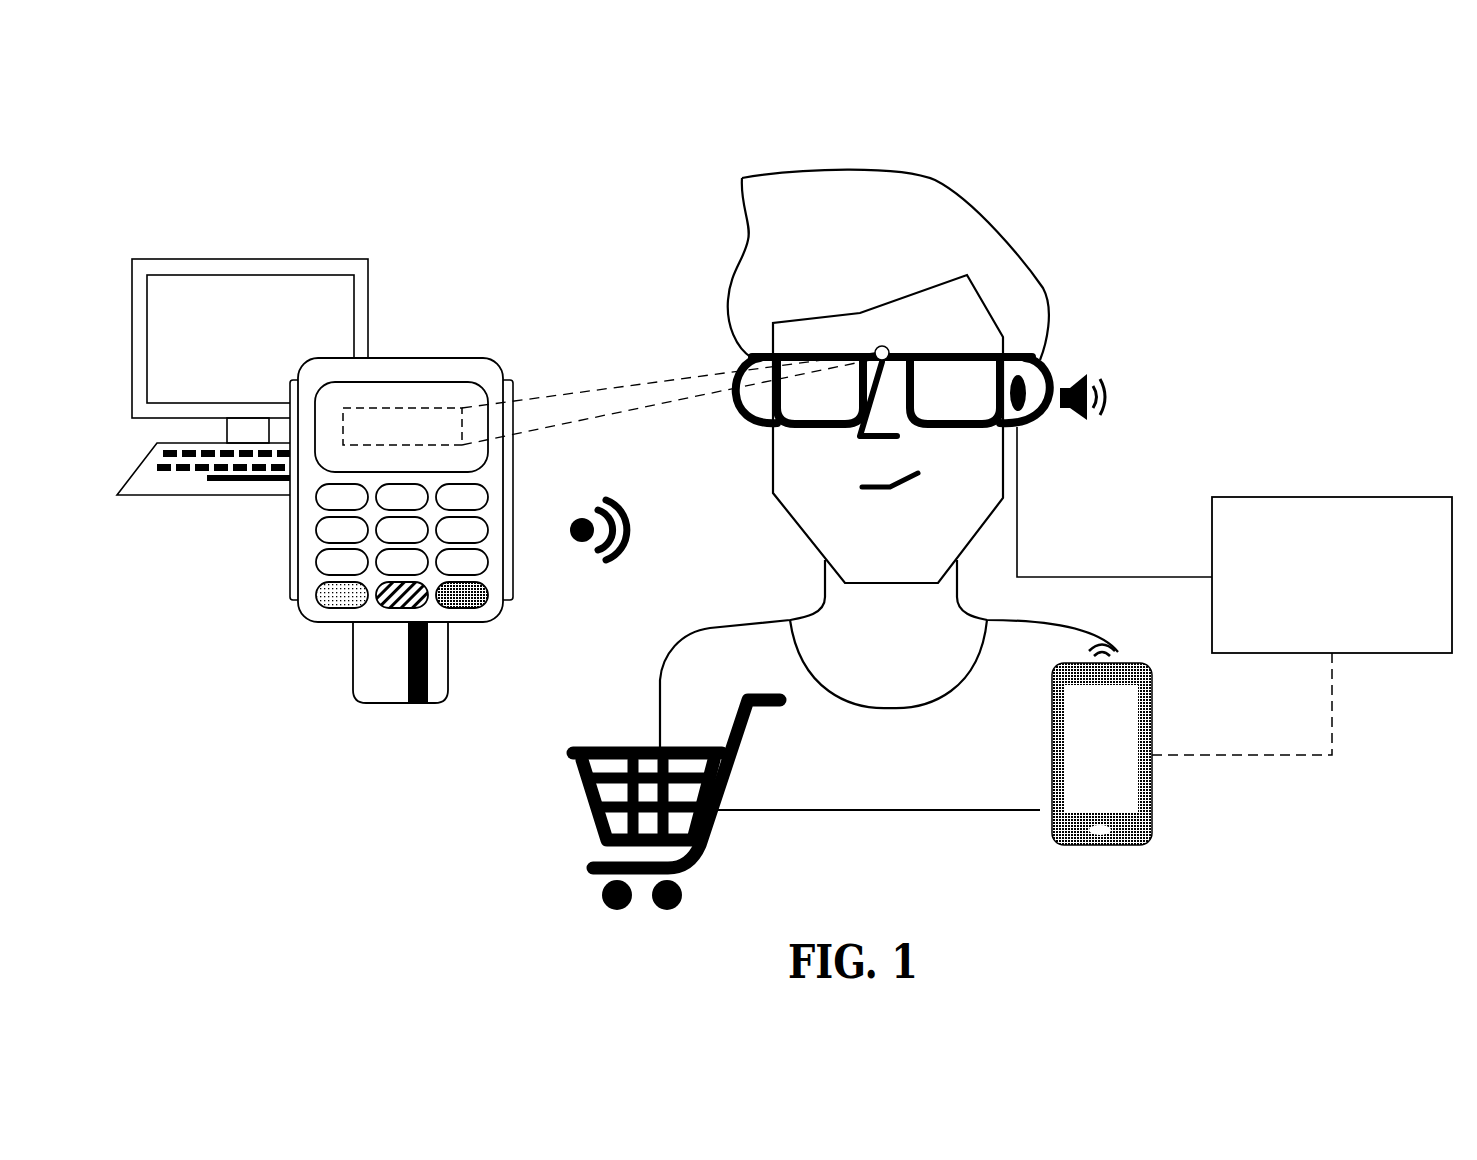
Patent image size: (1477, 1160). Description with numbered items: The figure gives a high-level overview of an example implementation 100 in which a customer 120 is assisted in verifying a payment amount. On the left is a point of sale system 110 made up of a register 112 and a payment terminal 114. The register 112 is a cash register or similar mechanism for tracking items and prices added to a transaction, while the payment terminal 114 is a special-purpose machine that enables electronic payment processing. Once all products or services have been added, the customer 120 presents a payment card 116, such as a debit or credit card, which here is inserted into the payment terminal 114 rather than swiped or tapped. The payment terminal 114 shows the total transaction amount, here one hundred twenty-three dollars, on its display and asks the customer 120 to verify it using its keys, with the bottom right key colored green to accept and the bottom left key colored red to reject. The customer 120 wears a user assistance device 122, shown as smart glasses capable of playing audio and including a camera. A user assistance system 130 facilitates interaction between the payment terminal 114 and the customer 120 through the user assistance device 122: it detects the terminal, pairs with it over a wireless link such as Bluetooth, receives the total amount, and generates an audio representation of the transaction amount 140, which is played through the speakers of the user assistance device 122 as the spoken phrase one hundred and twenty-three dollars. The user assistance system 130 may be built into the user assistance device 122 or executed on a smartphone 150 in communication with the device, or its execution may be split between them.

The implementation 100 is at (1287, 128).
The point of sale system 110 is at (463, 222).
The register 112 is at (291, 258).
The payment terminal 114 is at (402, 358).
The payment card 116 is at (448, 677).
The customer 120 is at (1005, 225).
The user assistance device 122 is at (1046, 354).
The user assistance system 130 is at (1333, 497).
The audio representation of the transaction amount 140 is at (1317, 342).
The smartphone 150 is at (1150, 832).